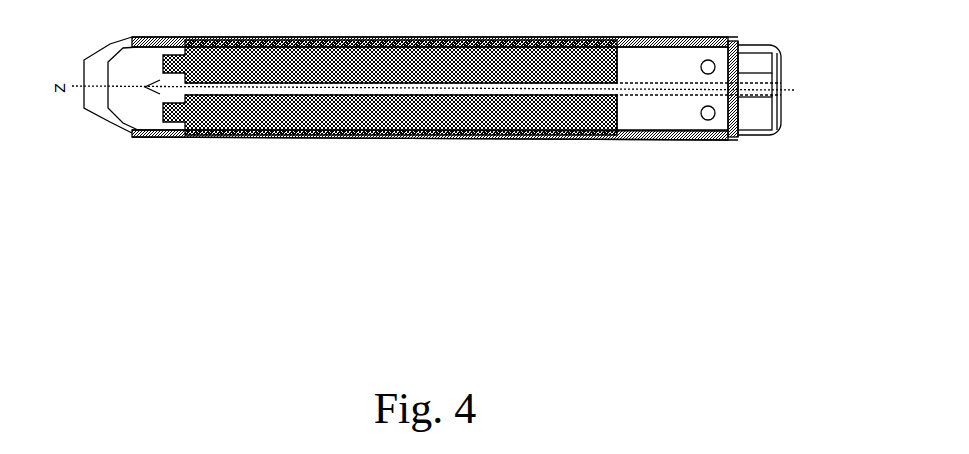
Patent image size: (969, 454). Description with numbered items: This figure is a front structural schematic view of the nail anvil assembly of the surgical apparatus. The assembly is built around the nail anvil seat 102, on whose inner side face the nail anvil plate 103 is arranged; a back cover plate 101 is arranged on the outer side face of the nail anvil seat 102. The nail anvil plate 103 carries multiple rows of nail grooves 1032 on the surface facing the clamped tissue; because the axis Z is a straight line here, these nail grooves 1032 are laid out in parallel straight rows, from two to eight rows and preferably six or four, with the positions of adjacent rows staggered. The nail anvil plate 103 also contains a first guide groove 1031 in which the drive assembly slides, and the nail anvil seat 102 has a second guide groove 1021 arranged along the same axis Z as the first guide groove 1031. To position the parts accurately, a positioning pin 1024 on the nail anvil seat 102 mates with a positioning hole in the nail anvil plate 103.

The back cover plate 101 is at (435, 135).
The nail anvil seat 102 is at (108, 135).
The nail anvil plate 103 is at (153, 140).
The nail grooves 1032 is at (390, 136).
The first guide groove 1031 is at (667, 95).
The positioning pin 1024 is at (708, 121).
The second guide groove 1021 is at (755, 139).